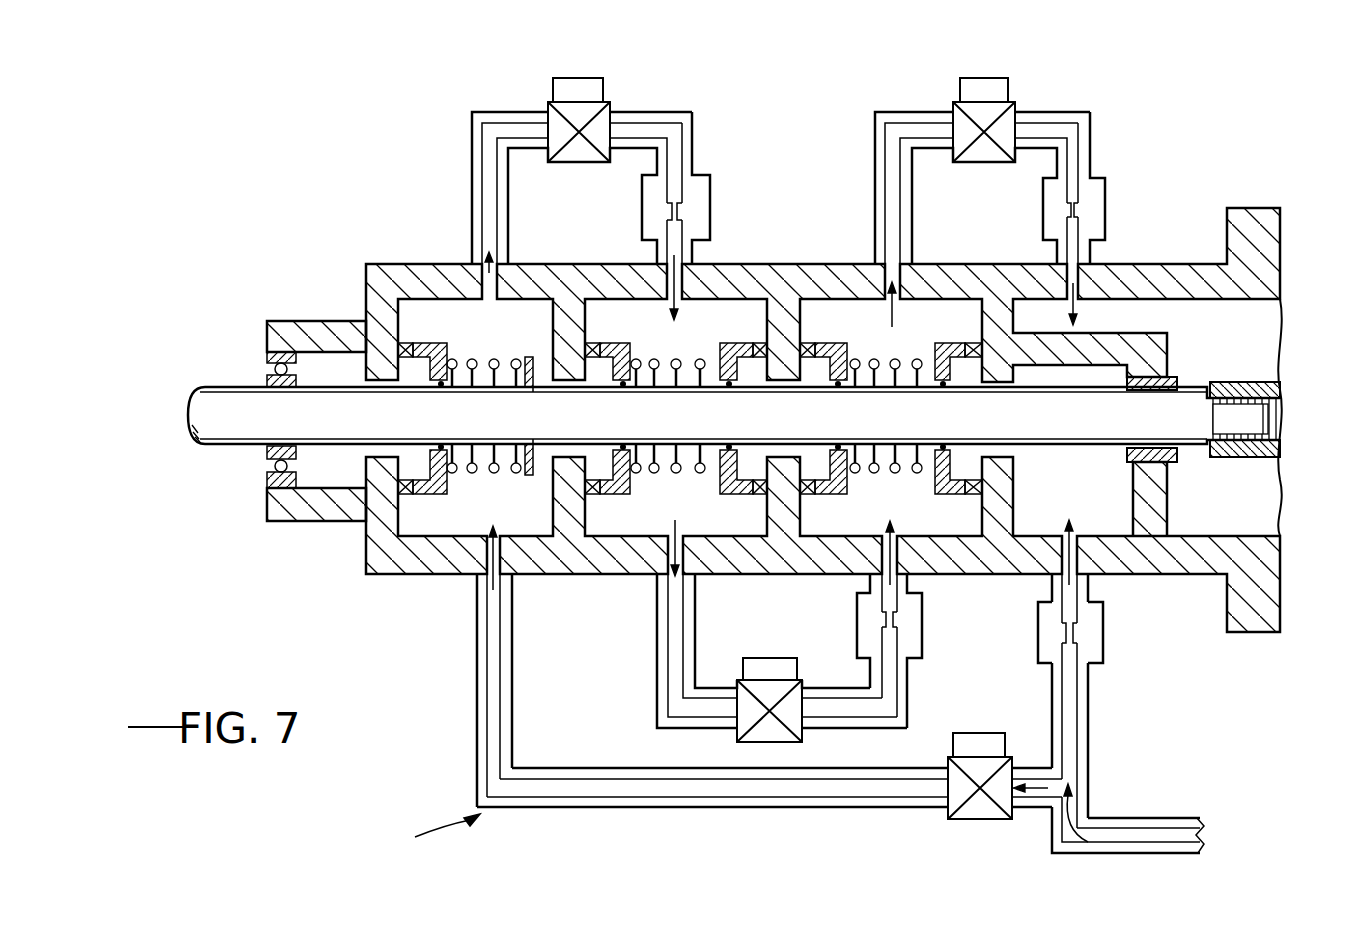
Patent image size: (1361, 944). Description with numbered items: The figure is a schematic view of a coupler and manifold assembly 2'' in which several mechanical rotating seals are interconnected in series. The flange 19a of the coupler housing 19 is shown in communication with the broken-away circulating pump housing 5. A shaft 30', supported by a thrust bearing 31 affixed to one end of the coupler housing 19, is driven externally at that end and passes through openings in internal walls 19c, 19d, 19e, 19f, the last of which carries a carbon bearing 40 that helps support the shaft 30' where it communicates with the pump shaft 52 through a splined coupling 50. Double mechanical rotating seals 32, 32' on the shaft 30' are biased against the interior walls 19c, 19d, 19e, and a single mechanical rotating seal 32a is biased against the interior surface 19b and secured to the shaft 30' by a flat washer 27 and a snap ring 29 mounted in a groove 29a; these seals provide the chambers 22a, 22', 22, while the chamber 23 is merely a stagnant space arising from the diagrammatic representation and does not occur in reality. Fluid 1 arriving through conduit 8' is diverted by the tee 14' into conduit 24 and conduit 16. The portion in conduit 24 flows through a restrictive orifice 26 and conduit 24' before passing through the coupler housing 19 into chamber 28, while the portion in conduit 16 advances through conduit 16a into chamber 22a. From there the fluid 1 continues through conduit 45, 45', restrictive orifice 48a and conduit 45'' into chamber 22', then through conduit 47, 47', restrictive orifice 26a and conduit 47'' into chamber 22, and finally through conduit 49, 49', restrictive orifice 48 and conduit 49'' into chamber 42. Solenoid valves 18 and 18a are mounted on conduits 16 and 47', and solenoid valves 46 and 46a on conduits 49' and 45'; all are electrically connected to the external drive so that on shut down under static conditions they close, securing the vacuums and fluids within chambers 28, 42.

The fluid 1 is at (1075, 855).
The coupler and manifold assembly 2'' is at (421, 834).
The circulating pump housing 5 is at (1268, 634).
The conduit 8' is at (1157, 806).
The tee 14' is at (1113, 804).
The conduit 16 is at (700, 810).
The conduit 16a is at (477, 700).
The solenoid valve 18 is at (950, 823).
The solenoid valve 18a is at (737, 737).
The coupler housing 19 is at (1000, 577).
The flange 19a is at (1238, 208).
The interior surface 19b is at (407, 303).
The internal wall 19c is at (556, 336).
The internal wall 19d is at (768, 322).
The internal wall 19e is at (984, 324).
The internal wall 19f is at (1133, 497).
The chamber 22 is at (886, 477).
The chamber 22' is at (668, 477).
The chamber 22a is at (520, 509).
The stagnant chamber 23 is at (817, 372).
The conduit 24 is at (1115, 735).
The conduit 24' is at (1116, 571).
The restrictive orifice 26 is at (1070, 635).
The restrictive orifice 26a is at (893, 620).
The flat washer 27 is at (523, 357).
The chamber 28 is at (1076, 494).
The snap ring 29 is at (533, 378).
The groove 29a is at (525, 393).
The shaft 30' is at (706, 369).
The thrust bearing 31 is at (265, 483).
The double mechanical rotating seal 32 is at (982, 534).
The double mechanical rotating seal 32' is at (753, 534).
The single mechanical rotating seal 32a is at (430, 508).
The carbon bearing 40 is at (1180, 377).
The chamber 42 is at (1242, 511).
The conduit 45 is at (582, 201).
The conduit 45' is at (552, 166).
The conduit 45'' is at (732, 216).
The solenoid valve 46 is at (1017, 104).
The solenoid valve 46a is at (600, 103).
The conduit 47 is at (648, 624).
The conduit 47' is at (856, 724).
The conduit 47'' is at (858, 624).
The restrictive orifice 48 is at (1077, 210).
The restrictive orifice 48a is at (680, 210).
The conduit 49 is at (983, 201).
The conduit 49' is at (974, 191).
The conduit 49'' is at (1132, 218).
The splined coupling 50 is at (1250, 383).
The pump shaft 52 is at (1283, 420).